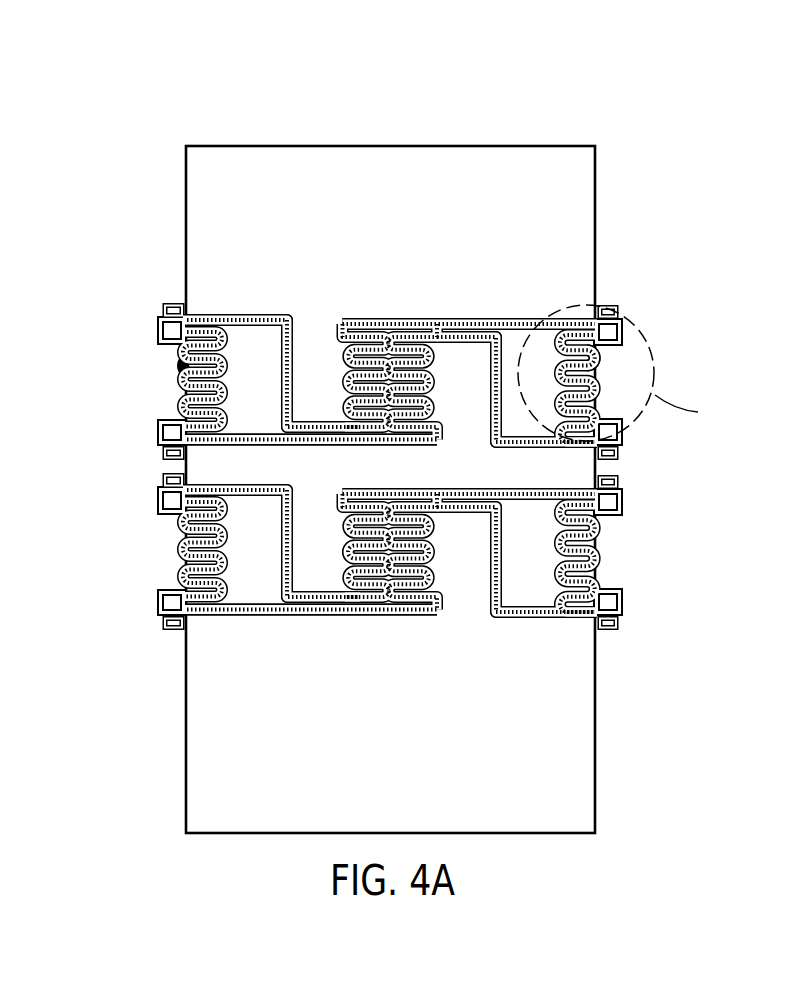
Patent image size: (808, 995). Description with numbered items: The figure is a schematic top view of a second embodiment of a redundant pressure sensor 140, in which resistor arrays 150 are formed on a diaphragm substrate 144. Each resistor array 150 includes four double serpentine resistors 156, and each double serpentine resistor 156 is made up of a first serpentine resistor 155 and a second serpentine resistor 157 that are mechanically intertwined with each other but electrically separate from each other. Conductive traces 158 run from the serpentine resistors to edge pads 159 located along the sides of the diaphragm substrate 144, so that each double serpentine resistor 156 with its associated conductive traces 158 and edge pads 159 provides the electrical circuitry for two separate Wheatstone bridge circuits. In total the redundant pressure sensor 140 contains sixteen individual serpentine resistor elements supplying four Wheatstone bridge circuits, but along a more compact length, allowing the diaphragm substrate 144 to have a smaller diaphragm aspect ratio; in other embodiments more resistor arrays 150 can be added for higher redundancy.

The redundant pressure sensor 140 is at (431, 429).
The diaphragm substrate 144 is at (500, 146).
The resistor array 150 is at (381, 455).
The first serpentine resistor 155 is at (178, 383).
The double serpentine resistor 156 is at (387, 455).
The second serpentine resistor 157 is at (222, 326).
The conductive trace 158 is at (262, 316).
The edge pad 159 is at (178, 303).